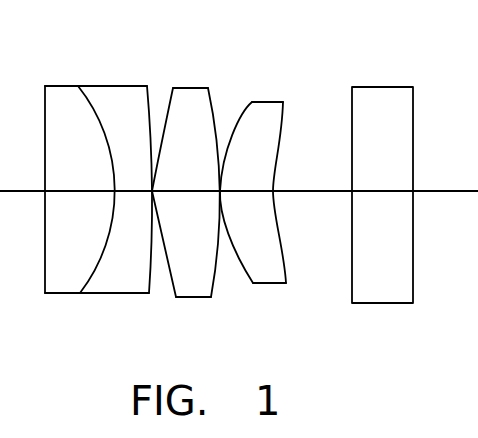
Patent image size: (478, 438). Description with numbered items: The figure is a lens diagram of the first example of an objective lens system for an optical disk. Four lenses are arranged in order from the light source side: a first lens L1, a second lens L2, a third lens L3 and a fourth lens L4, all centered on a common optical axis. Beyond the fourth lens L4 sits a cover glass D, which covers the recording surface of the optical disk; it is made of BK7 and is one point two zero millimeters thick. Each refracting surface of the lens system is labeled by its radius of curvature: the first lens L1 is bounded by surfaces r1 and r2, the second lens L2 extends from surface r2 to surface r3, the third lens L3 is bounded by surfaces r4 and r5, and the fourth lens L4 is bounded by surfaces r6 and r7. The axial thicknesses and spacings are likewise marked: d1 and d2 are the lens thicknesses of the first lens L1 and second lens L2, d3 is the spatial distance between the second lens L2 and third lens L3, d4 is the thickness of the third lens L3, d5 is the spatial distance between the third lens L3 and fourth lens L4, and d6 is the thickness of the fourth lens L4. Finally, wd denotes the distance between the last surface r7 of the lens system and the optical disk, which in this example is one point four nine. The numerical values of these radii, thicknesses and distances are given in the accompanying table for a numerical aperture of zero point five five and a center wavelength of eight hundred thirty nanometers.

The first lens L1 is at (66, 191).
The second lens L2 is at (115, 191).
The third lens L3 is at (188, 191).
The fourth lens L4 is at (262, 191).
The cover glass D is at (387, 303).
The radius of curvature of surface 1 r1 is at (45, 120).
The radius of curvature of surface 2 r2 is at (90, 105).
The radius of curvature of surface 3 r3 is at (148, 100).
The radius of curvature of surface 4 r4 is at (173, 89).
The radius of curvature of surface 5 r5 is at (210, 98).
The radius of curvature of surface 6 r6 is at (243, 108).
The radius of curvature of surface 7 r7 is at (283, 118).
The lens thickness at surface 1 d1 is at (73, 191).
The lens thickness at surface 2 d2 is at (127, 191).
The spatial distance at surface 3 d3 is at (152, 191).
The lens thickness at surface 4 d4 is at (184, 191).
The spatial distance at surface 5 d5 is at (220, 191).
The lens thickness at surface 6 d6 is at (253, 191).
The working distance wd is at (317, 191).